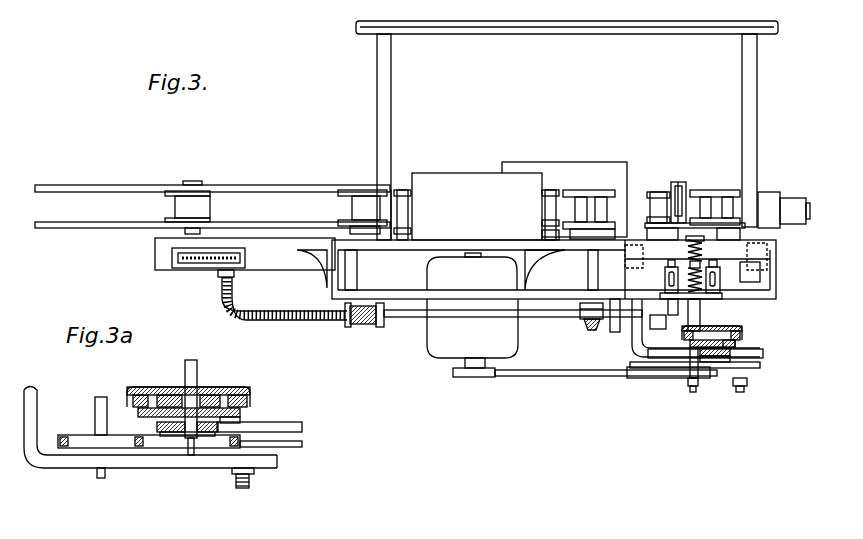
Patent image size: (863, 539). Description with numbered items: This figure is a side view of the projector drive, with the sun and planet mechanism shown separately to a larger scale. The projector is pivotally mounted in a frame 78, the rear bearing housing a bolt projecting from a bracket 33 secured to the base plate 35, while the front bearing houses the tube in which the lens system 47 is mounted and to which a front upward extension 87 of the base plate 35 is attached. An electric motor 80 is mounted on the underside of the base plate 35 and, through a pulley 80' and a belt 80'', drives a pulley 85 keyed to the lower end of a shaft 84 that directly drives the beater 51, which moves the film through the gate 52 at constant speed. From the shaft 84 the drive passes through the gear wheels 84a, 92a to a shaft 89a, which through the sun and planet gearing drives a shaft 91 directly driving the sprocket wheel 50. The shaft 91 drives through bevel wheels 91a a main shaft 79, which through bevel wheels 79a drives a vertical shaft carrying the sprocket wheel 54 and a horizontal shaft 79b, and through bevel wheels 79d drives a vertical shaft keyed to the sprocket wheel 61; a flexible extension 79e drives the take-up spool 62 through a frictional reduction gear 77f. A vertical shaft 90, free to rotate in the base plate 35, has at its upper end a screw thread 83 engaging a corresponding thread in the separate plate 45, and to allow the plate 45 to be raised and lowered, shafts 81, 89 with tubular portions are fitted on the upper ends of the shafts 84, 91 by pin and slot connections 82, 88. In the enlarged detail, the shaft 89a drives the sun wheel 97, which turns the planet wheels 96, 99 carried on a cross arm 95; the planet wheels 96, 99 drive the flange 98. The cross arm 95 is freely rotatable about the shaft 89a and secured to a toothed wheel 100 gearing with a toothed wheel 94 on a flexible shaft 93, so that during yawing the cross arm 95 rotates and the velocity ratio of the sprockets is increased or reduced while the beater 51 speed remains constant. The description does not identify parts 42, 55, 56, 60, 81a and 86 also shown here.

In FIG. 3, the bracket 33 is at (393, 190).
In FIG. 3, the base plate 35 is at (480, 290).
In FIG. 3, the shaft 42 is at (676, 182).
In FIG. 3, the separate plate 45 is at (745, 248).
In FIG. 3, the lens system 47 is at (792, 212).
In FIG. 3, the sprocket wheel 50 is at (720, 190).
In FIG. 3, the beater 51 is at (679, 182).
In FIG. 3, the gate 52 is at (657, 192).
In FIG. 3, the sprocket wheel 54 is at (577, 190).
In FIG. 3, the housing 55 is at (466, 195).
In FIG. 3, the post 56 is at (548, 190).
In FIG. 3, the post 60 is at (406, 190).
In FIG. 3, the sprocket wheel 61 is at (356, 190).
In FIG. 3, the take-up spool 62 is at (281, 186).
In FIG. 3, the frictional reduction gear 77f is at (202, 266).
In FIG. 3, the frame 78 is at (384, 78).
In FIG. 3, the main shaft 79 is at (420, 318).
In FIG. 3, the bevel wheels 79a is at (590, 331).
In FIG. 3, the horizontal shaft 79b is at (585, 318).
In FIG. 3, the bevel wheels 79d is at (374, 326).
In FIG. 3, the flexible extension 79e is at (280, 321).
In FIG. 3, the electric motor 80 is at (472, 328).
In FIG. 3, the pulley 80' is at (466, 385).
In FIG. 3, the belt 80'' is at (606, 391).
In FIG. 3, the shaft 81 is at (626, 255).
In FIG. 3, the arm 81a is at (638, 372).
In FIG. 3, the pin and slot connection 82 is at (665, 284).
In FIG. 3, the screw thread 83 is at (702, 250).
In FIG. 3, the shaft 84 is at (632, 350).
In FIG. 3A, the shaft 84 is at (34, 398).
In FIG. 3A, the gear wheel 84a is at (83, 449).
In FIG. 3, the pulley 85 is at (688, 332).
In FIG. 3, the bolt 86 is at (692, 392).
In FIG. 3, the front upward extension 87 is at (768, 257).
In FIG. 3, the pin and slot connection 88 is at (720, 274).
In FIG. 3, the shaft 89 is at (702, 265).
In FIG. 3, the shaft 89a is at (696, 380).
In FIG. 3A, the shaft 89a is at (191, 455).
In FIG. 3, the vertical shaft 90 is at (722, 296).
In FIG. 3, the shaft 91 is at (700, 310).
In FIG. 3A, the shaft 91 is at (198, 366).
In FIG. 3, the bevel wheels 91a is at (652, 328).
In FIG. 3, the gear wheel 92a is at (745, 367).
In FIG. 3A, the gear wheel 92a is at (282, 444).
In FIG. 3, the flexible shaft 93 is at (742, 388).
In FIG. 3A, the flexible shaft 93 is at (250, 486).
In FIG. 3, the toothed wheel 94 is at (755, 352).
In FIG. 3A, the toothed wheel 94 is at (270, 424).
In FIG. 3, the cross arm 95 is at (730, 353).
In FIG. 3A, the cross arm 95 is at (158, 424).
In FIG. 3, the planet wheel 96 is at (741, 334).
In FIG. 3A, the planet wheel 96 is at (245, 395).
In FIG. 3, the sun wheel 97 is at (700, 348).
In FIG. 3A, the sun wheel 97 is at (175, 398).
In FIG. 3, the flange 98 is at (735, 343).
In FIG. 3A, the flange 98 is at (252, 400).
In FIG. 3, the planet wheel 99 is at (700, 338).
In FIG. 3A, the planet wheel 99 is at (138, 388).
In FIG. 3, the toothed wheel 100 is at (728, 364).
In FIG. 3A, the toothed wheel 100 is at (173, 435).